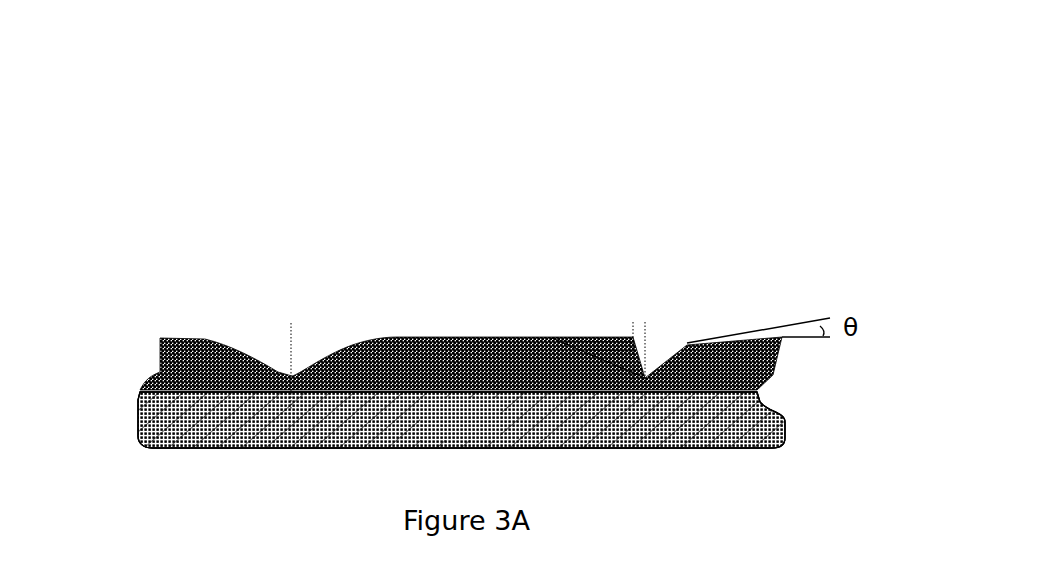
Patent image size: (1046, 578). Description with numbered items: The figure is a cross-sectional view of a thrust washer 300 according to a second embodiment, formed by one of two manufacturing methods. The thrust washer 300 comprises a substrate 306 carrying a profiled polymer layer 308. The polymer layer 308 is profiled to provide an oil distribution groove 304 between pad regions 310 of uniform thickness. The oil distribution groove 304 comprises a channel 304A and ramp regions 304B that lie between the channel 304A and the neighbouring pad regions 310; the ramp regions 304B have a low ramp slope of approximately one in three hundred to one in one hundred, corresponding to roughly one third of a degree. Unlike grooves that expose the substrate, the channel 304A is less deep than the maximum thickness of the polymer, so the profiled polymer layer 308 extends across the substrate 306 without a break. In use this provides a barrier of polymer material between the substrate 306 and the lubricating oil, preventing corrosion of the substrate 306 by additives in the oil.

The thrust washer 300 is at (678, 117).
The oil distribution groove 304 is at (678, 268).
The channel 304A is at (283, 367).
The ramp region 304B is at (203, 327).
The substrate 306 is at (192, 417).
The profiled polymer layer 308 is at (192, 378).
The pad region 310 is at (468, 330).